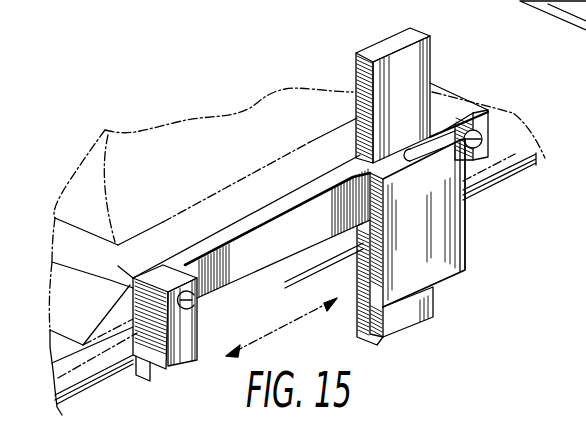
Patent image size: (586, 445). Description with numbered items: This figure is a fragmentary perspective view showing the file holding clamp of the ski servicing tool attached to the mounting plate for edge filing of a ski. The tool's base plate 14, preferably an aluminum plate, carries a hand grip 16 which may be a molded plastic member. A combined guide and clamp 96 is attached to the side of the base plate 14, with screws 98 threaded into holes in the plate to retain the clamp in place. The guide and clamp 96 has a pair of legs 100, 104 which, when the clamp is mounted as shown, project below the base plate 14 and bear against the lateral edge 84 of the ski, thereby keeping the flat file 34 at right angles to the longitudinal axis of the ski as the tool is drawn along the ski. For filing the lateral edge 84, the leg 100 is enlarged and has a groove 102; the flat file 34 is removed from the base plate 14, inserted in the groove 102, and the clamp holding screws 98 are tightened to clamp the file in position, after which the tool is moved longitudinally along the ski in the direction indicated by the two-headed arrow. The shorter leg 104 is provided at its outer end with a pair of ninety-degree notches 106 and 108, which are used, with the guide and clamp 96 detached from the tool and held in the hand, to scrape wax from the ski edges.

The base plate 14 is at (273, 181).
The hand grip 16 is at (297, 112).
The flat file 34 is at (418, 58).
The lateral edge of the ski 84 is at (72, 397).
The combined guide and clamp 96 is at (257, 262).
The screws 98 is at (190, 302).
The leg 100 is at (460, 233).
The groove 102 is at (417, 150).
The leg 104 is at (190, 347).
The notch 106 is at (175, 370).
The notch 108 is at (137, 370).